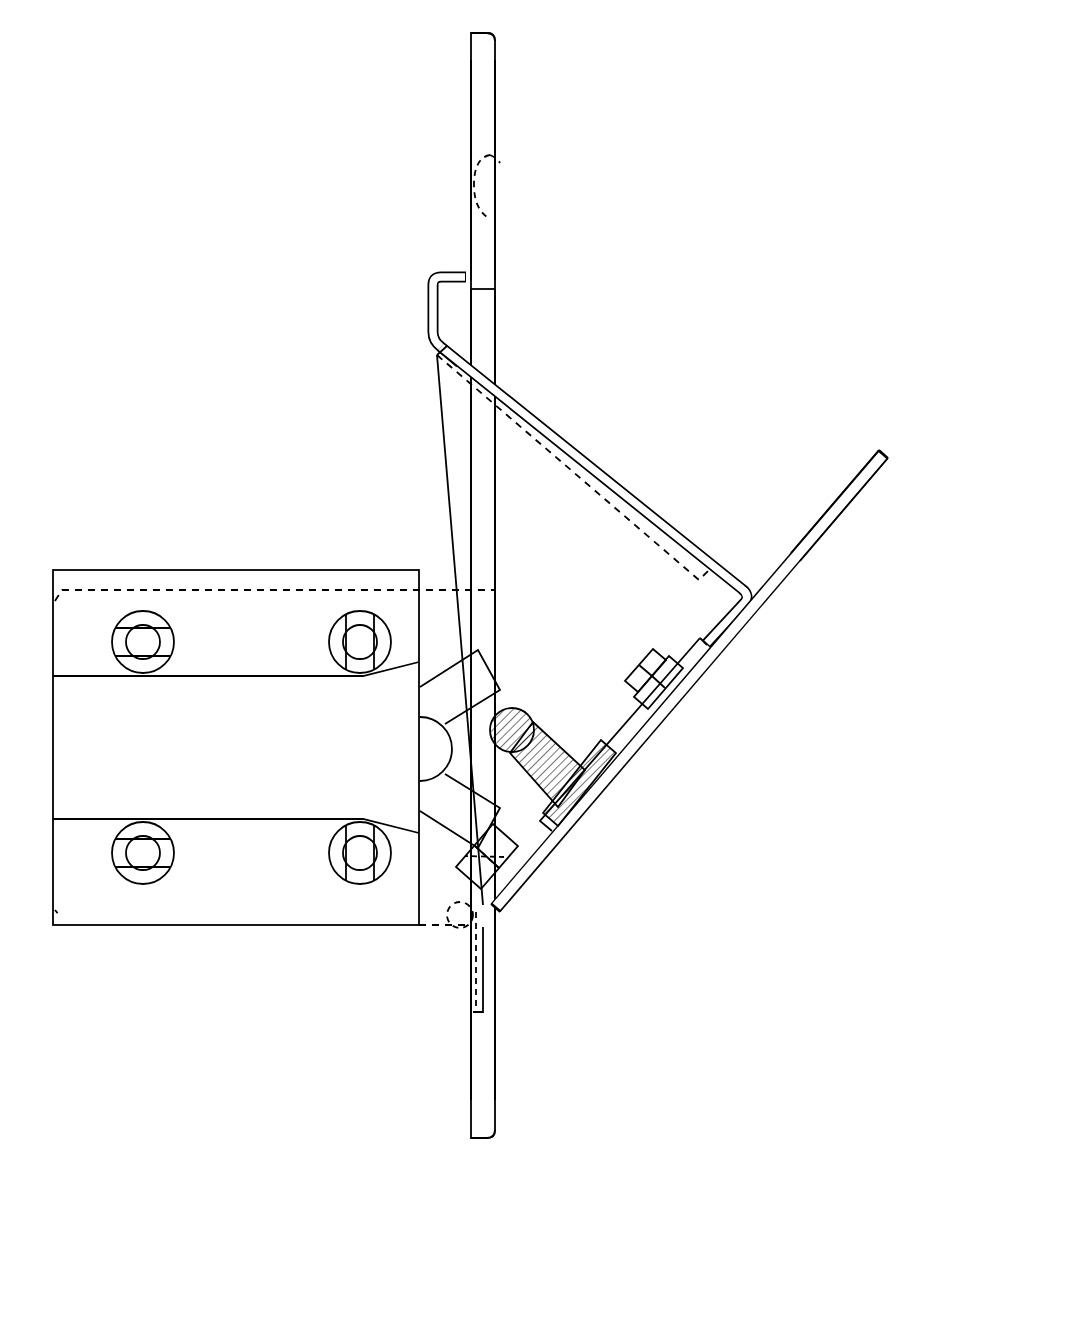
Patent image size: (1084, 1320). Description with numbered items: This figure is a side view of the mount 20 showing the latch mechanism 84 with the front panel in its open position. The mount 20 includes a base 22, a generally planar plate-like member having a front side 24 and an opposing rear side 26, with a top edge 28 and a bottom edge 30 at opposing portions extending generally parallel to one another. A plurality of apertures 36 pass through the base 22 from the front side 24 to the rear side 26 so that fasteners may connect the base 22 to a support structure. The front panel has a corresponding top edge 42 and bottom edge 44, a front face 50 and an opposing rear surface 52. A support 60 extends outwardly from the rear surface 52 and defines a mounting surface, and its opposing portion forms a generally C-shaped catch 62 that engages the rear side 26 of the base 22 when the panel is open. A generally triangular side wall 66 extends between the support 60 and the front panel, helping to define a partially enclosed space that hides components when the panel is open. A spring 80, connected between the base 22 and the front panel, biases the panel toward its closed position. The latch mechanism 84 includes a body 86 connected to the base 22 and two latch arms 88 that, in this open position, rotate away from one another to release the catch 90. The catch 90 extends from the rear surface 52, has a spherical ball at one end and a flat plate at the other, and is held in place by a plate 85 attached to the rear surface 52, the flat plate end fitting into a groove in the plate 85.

The mount 20 is at (676, 47).
The base 22 is at (485, 94).
The front side 24 is at (498, 270).
The rear side 26 is at (466, 146).
The top edge 28 is at (484, 34).
The bottom edge 30 is at (483, 1140).
The aperture 36 is at (500, 163).
The top edge 42 is at (886, 456).
The bottom edge 44 is at (494, 918).
The front face 50 is at (800, 569).
The rear surface 52 is at (855, 470).
The support 60 is at (590, 460).
The catch 62 is at (426, 291).
The side wall 66 is at (454, 430).
The spring 80 is at (454, 930).
The latch mechanism 84 is at (273, 556).
The plate 85 is at (633, 714).
The body 86 is at (123, 579).
The latch arm 88 is at (481, 683).
The catch 90 is at (519, 720).